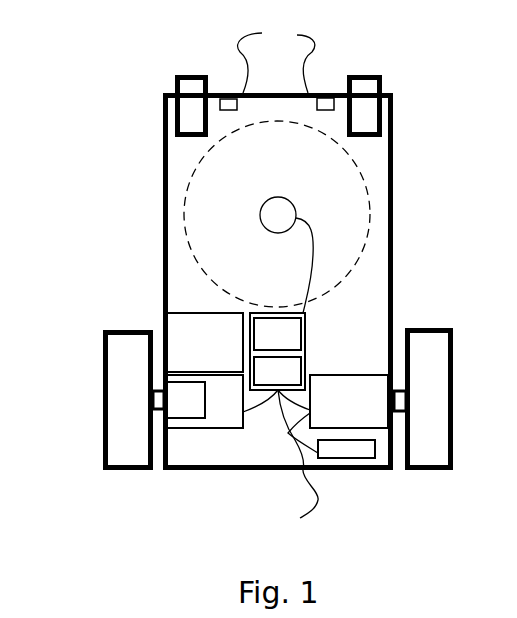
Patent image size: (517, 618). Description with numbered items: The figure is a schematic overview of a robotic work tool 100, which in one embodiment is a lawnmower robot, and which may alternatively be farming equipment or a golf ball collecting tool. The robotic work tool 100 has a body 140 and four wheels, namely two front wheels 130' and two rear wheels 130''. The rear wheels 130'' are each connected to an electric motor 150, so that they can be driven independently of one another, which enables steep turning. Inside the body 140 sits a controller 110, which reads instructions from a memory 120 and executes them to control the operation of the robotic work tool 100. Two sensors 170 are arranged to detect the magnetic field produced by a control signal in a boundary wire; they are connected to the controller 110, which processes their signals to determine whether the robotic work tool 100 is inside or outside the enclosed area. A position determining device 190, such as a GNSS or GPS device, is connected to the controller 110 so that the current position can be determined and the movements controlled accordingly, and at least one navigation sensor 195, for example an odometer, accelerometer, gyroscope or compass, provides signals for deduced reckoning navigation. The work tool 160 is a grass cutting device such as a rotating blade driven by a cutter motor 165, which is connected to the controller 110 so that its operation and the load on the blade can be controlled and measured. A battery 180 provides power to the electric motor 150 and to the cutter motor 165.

The robotic work tool 100 is at (163, 135).
The controller 110 is at (305, 332).
The memory 120 is at (305, 368).
The front wheels 130' is at (333, 131).
The rear wheels 130'' is at (243, 443).
The body 140 is at (183, 470).
The electric motor 150 is at (237, 412).
The work tool 160 is at (193, 249).
The cutter motor 165 is at (260, 220).
The sensor 170 is at (276, 53).
The battery 180 is at (180, 332).
The position determining device 190 is at (332, 458).
The navigation sensor 195 is at (185, 418).